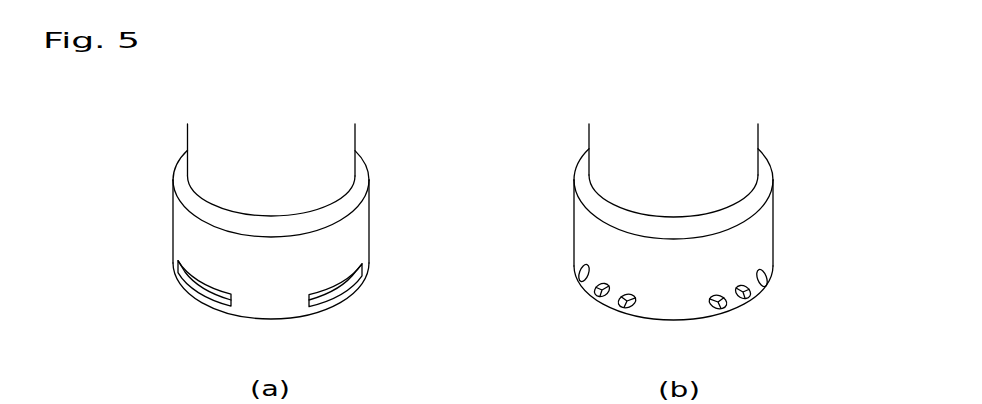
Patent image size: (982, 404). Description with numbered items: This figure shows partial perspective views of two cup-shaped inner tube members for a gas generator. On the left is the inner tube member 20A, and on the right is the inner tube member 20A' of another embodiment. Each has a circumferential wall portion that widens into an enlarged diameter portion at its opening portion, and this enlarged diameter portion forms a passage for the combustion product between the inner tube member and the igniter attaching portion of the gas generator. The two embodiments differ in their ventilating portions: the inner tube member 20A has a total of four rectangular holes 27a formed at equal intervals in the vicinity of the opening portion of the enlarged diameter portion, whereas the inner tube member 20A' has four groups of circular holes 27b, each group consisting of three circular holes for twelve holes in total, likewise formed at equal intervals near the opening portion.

The inner tube member 20A is at (272, 220).
The inner tube member 20A' is at (674, 222).
The rectangular holes (ventilating portions) 27a is at (203, 288).
The circular holes (ventilating portions) 27b is at (624, 309).